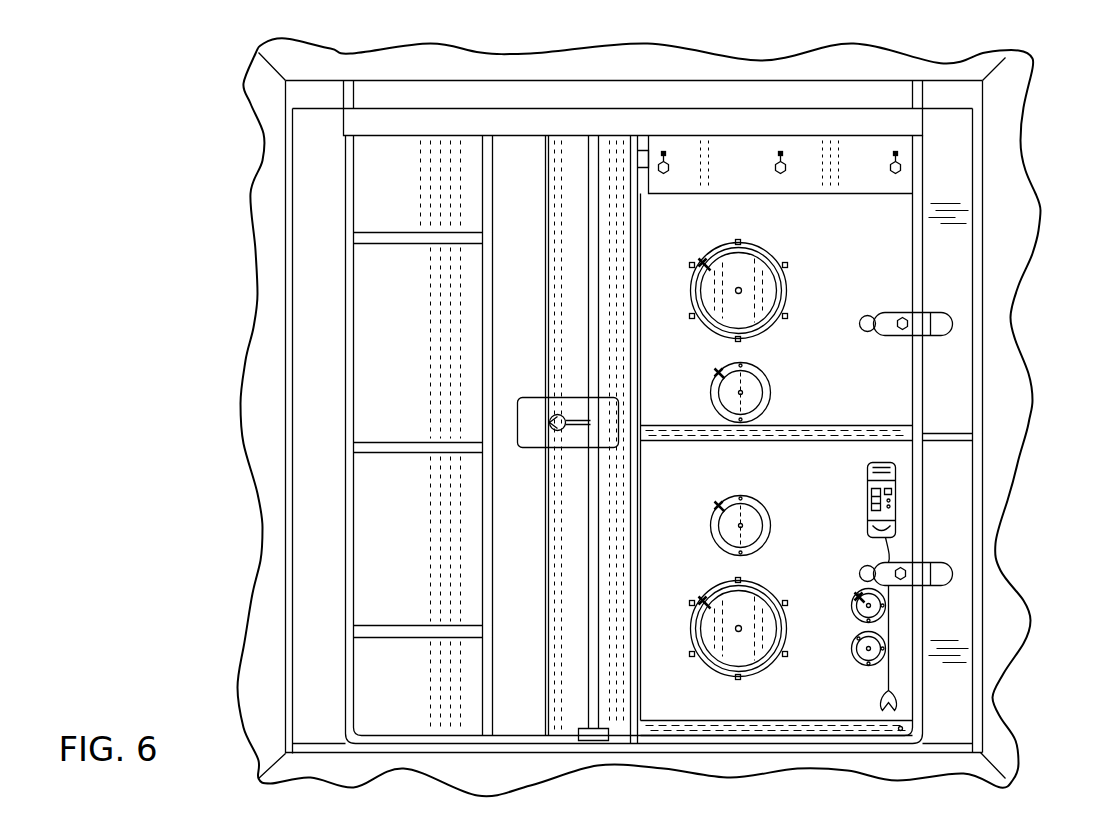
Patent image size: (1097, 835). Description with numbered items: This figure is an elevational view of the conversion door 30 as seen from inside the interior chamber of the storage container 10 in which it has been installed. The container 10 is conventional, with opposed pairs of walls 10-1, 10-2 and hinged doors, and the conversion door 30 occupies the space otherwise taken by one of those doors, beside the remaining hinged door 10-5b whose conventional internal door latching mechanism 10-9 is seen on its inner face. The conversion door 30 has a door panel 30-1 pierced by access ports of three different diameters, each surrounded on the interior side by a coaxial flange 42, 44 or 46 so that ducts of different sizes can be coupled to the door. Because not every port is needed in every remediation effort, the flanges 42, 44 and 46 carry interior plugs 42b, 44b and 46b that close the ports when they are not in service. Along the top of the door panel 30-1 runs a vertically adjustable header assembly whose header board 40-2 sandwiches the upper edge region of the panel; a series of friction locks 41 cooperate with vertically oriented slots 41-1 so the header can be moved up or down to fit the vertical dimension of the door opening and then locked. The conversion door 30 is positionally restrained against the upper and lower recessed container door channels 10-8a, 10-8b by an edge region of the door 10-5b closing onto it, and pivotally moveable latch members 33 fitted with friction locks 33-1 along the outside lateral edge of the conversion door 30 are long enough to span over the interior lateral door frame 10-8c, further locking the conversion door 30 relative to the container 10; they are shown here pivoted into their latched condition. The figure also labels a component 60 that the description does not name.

The storage container 10 is at (249, 516).
The wall 10-1 is at (328, 63).
The wall 10-2 is at (258, 208).
The hinged door 10-5b is at (532, 247).
The upper recessed container door channel 10-8a is at (835, 117).
The lower recessed container door channel 10-8b is at (793, 747).
The interior lateral door frame 10-8c is at (917, 247).
The internal door latching mechanism 10-9 is at (572, 437).
The conversion door 30 is at (880, 388).
The door panel 30-1 is at (838, 257).
The latch member 33 is at (937, 336).
The friction lock 33-1 is at (901, 316).
The header board 40-2 is at (781, 165).
The friction lock 41 is at (665, 175).
The vertically oriented slot 41-1 is at (664, 151).
The flange 42 is at (753, 590).
The interior plug 42b is at (751, 322).
The flange 44 is at (757, 372).
The interior plug 44b is at (757, 413).
The flange 46 is at (851, 608).
The interior plug 46b is at (858, 655).
The retaining clip 60 is at (696, 266).